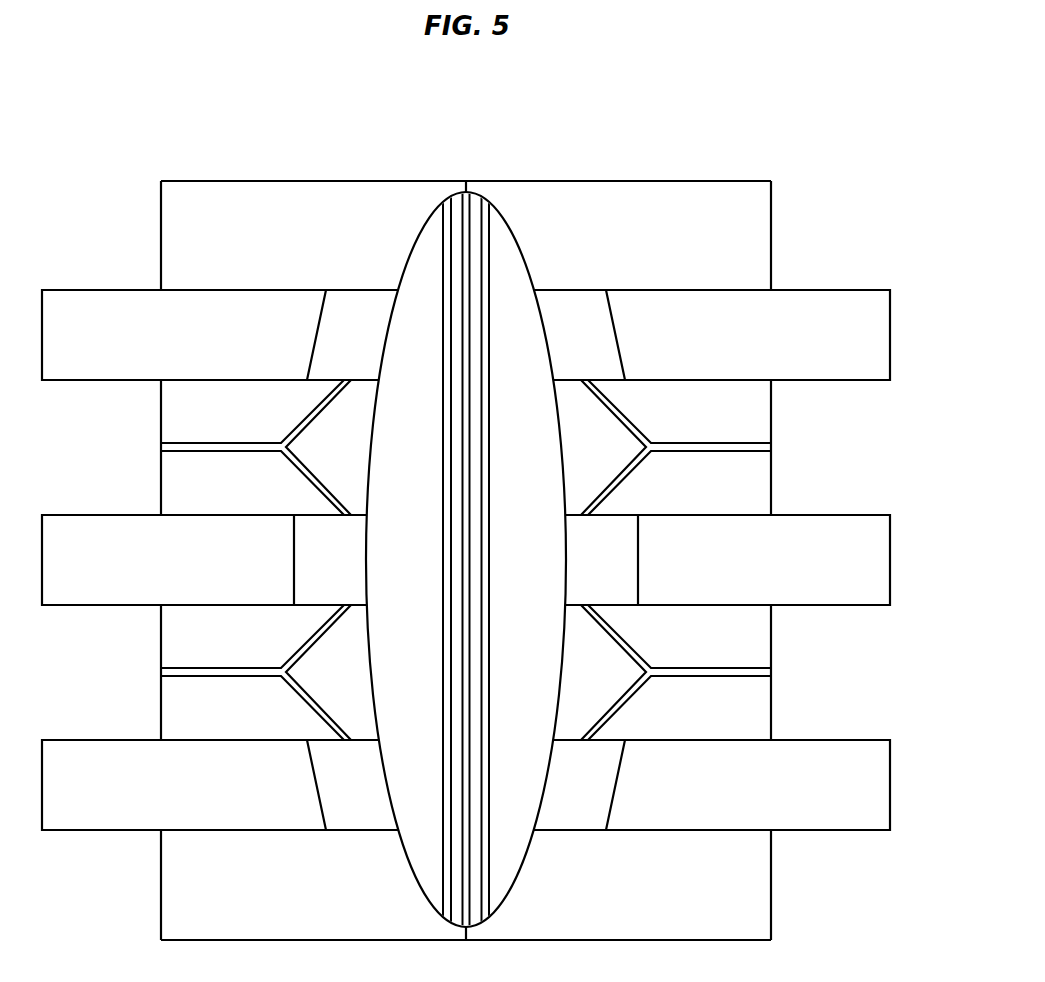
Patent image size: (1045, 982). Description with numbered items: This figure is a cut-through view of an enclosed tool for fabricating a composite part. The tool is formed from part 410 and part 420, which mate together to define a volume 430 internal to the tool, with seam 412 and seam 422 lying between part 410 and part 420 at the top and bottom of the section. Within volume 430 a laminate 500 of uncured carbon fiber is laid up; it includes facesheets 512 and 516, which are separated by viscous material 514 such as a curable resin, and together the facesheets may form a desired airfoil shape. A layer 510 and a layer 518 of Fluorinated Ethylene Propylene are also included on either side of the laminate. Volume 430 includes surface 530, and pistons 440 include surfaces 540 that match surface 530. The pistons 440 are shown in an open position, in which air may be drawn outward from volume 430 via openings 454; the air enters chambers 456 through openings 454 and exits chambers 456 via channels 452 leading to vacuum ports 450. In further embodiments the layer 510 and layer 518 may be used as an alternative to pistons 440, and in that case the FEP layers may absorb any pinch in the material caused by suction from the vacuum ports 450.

The part 410 is at (632, 181).
The seam 412 is at (471, 178).
The part 420 is at (373, 181).
The seam 422 is at (470, 946).
The volume 430 is at (430, 860).
The pistons 440 is at (82, 296).
The vacuum ports 450 is at (160, 448).
The channels 452 is at (625, 418).
The openings 454 is at (393, 352).
The chambers 456 is at (332, 348).
The laminate 500 is at (500, 272).
The layer 510 is at (493, 535).
The facesheet 512 is at (483, 462).
The viscous material 514 is at (470, 400).
The facesheet 516 is at (455, 483).
The layer 518 is at (437, 553).
The surface 530 is at (378, 690).
The surfaces 540 is at (328, 329).